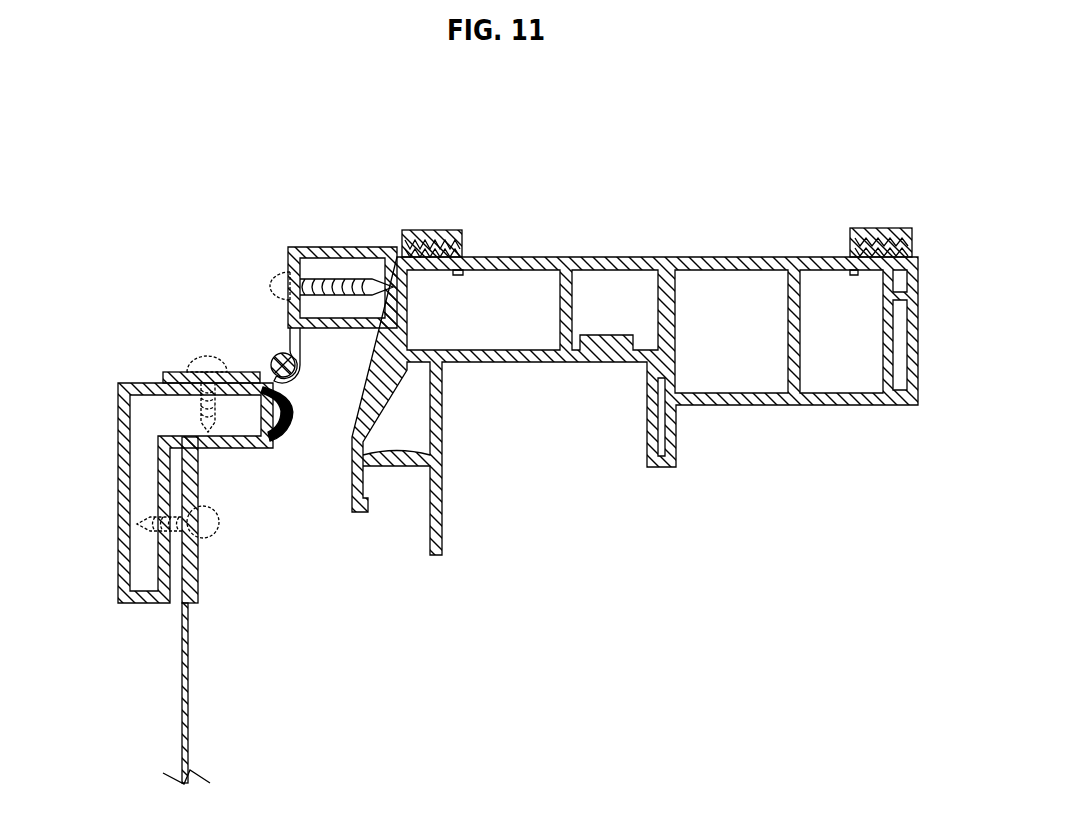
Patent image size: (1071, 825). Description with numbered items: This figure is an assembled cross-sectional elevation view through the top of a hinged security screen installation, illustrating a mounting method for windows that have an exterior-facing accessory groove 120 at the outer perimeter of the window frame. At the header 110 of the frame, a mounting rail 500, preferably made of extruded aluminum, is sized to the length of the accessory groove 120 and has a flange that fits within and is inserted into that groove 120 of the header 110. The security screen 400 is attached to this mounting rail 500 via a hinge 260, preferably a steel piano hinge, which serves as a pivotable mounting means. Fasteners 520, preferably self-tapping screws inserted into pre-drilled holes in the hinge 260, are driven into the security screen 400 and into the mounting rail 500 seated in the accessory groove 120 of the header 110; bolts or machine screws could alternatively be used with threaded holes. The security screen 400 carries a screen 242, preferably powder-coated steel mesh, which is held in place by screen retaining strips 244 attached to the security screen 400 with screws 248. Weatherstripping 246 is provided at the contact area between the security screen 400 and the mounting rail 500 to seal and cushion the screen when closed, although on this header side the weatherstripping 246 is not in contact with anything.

The header 110 is at (650, 257).
The accessory groove 120 is at (453, 257).
The mounting rail 500 is at (338, 252).
The fasteners 520 is at (270, 284).
The hinge 260 is at (270, 351).
The security screen 400 is at (115, 425).
The weatherstripping 246 is at (292, 405).
The screen retaining strips 244 is at (199, 565).
The screws 248 is at (219, 518).
The screen 242 is at (185, 740).